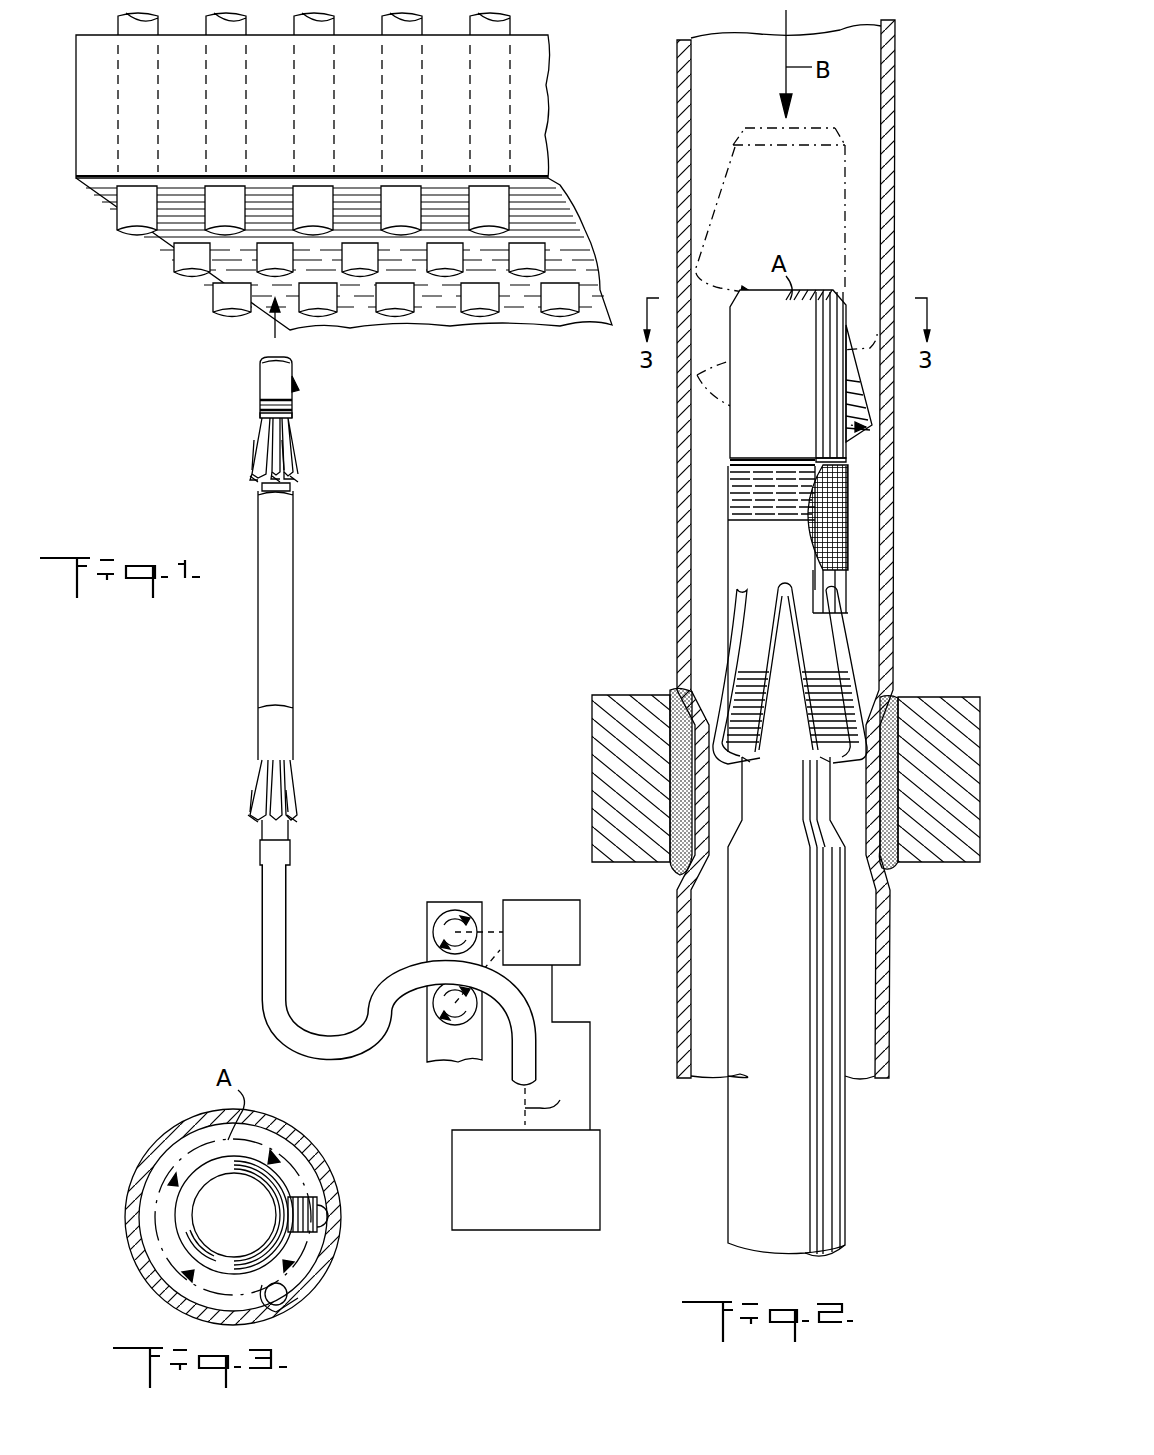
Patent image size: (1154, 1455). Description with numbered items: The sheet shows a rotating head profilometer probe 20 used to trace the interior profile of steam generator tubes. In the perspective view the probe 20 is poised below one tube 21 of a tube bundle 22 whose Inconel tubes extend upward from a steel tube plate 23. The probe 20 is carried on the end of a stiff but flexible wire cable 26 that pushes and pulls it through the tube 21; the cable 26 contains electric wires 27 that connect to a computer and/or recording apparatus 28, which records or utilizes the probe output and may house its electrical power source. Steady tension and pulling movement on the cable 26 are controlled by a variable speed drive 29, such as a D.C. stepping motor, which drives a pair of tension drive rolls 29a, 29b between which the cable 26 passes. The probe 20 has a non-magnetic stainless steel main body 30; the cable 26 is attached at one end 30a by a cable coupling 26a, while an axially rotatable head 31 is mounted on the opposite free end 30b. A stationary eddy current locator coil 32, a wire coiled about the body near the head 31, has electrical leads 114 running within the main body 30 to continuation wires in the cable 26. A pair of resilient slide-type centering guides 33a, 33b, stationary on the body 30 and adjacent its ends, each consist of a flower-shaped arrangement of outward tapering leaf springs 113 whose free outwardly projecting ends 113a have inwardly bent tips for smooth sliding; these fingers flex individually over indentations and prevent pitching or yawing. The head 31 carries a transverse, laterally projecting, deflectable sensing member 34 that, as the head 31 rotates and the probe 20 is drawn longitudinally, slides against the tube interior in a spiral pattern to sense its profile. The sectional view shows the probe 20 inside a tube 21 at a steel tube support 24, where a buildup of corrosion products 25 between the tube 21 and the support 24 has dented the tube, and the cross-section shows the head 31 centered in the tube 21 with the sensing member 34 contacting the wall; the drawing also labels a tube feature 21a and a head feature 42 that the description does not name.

In FIG. 1, the rotating head profilometer probe 20 is at (312, 562).
In FIG. 2, the rotating head profilometer probe 20 is at (708, 923).
In FIG. 1, the tube 21 is at (217, 312).
In FIG. 3, the tube 21 is at (292, 1157).
In FIG. 2, the tube 21 is at (677, 445).
In FIG. 3, the tube end 21a is at (286, 1300).
In FIG. 2, the tube end 21a is at (690, 885).
In FIG. 1, the tube bundle 22 is at (575, 12).
In FIG. 1, the tube plate 23 is at (522, 127).
In FIG. 2, the tube support 24 is at (630, 700).
In FIG. 1, the corrosion products 25 is at (480, 195).
In FIG. 2, the corrosion products 25 is at (670, 858).
In FIG. 1, the wire cable 26 is at (285, 917).
In FIG. 1, the cable coupling 26a is at (290, 850).
In FIG. 1, the electric wires 27 is at (552, 1100).
In FIG. 1, the computer and/or recording apparatus 28 is at (540, 1190).
In FIG. 1, the variable speed drive 29 is at (577, 967).
In FIG. 1, the tension drive roll 29a is at (466, 922).
In FIG. 1, the tension drive roll 29b is at (442, 1020).
In FIG. 1, the main body 30 is at (293, 632).
In FIG. 2, the main body 30 is at (768, 1157).
In FIG. 1, the end 30a is at (280, 830).
In FIG. 1, the free end 30b is at (264, 488).
In FIG. 2, the free end 30b is at (731, 462).
In FIG. 1, the rotatable head 31 is at (284, 373).
In FIG. 3, the rotatable head 31 is at (245, 1228).
In FIG. 2, the rotatable head 31 is at (845, 172).
In FIG. 1, the eddy current locator coil 32 is at (262, 412).
In FIG. 2, the eddy current locator coil 32 is at (790, 492).
In FIG. 1, the centering guide 33a is at (294, 781).
In FIG. 1, the centering guide 33b is at (296, 441).
In FIG. 2, the centering guide 33b is at (805, 572).
In FIG. 1, the sensing member 34 is at (292, 383).
In FIG. 3, the sensing member 34 is at (312, 1194).
In FIG. 2, the sensing member 34 is at (706, 235).
In FIG. 1, the projection 42 is at (295, 384).
In FIG. 3, the projection 42 is at (322, 1219).
In FIG. 2, the projection 42 is at (735, 290).
In FIG. 1, the leaf springs 113 is at (278, 458).
In FIG. 2, the leaf springs 113 is at (757, 643).
In FIG. 1, the outwardly projecting ends 113a is at (296, 484).
In FIG. 2, the outwardly projecting ends 113a is at (833, 760).
In FIG. 2, the electrical leads 114 is at (843, 545).